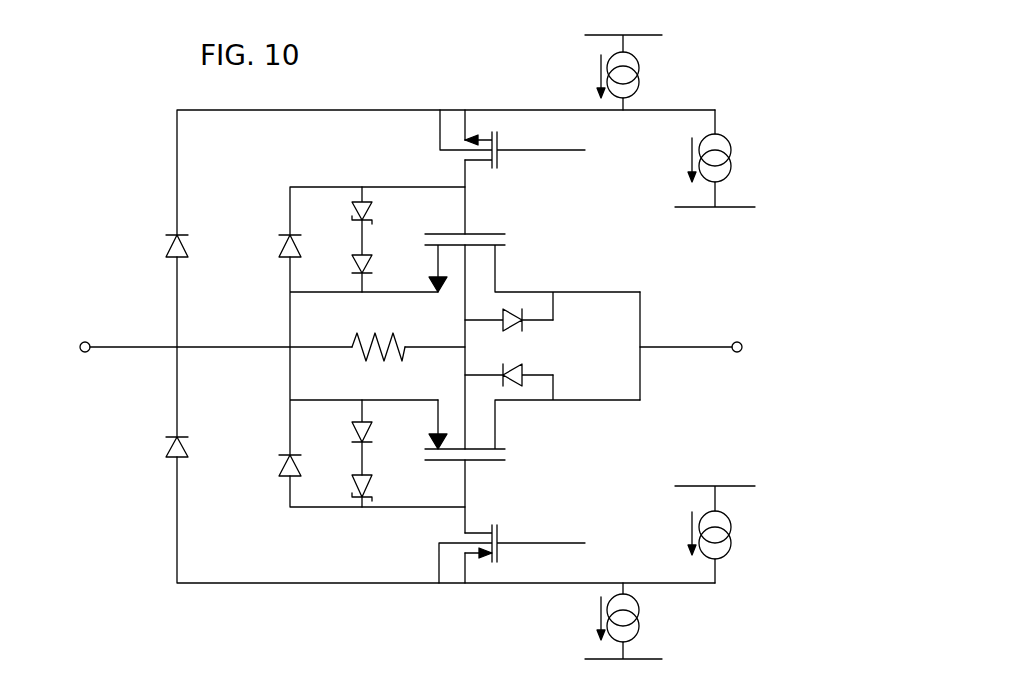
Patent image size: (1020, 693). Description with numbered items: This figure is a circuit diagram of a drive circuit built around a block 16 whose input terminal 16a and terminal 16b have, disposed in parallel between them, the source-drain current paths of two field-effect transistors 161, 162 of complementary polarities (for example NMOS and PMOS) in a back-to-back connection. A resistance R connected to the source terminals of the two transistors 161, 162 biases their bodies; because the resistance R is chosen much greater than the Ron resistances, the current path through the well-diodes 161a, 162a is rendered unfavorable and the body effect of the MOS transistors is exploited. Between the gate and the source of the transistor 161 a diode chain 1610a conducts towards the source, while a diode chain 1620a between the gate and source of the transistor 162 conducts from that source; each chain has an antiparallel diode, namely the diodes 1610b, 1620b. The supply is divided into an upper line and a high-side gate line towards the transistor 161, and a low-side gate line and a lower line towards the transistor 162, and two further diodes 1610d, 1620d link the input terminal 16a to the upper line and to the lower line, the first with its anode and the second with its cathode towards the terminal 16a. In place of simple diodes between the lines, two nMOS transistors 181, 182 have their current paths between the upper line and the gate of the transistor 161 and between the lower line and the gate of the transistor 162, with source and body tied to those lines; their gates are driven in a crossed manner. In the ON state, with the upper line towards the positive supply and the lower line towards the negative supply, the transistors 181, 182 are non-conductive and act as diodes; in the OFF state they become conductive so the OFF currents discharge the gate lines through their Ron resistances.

The block 16 is at (97, 160).
The input terminal 16a is at (93, 335).
The terminal 16b is at (746, 342).
The transistor 161 is at (504, 228).
The transistor 162 is at (497, 468).
The well-diode 161a is at (523, 328).
The well-diode 162a is at (523, 367).
The diode chain 1610a is at (352, 232).
The diode 1610b is at (281, 250).
The diode 1610d is at (166, 250).
The diode chain 1620a is at (352, 460).
The diode 1620b is at (281, 475).
The diode 1620d is at (167, 458).
The resistance R is at (380, 336).
The MOS transistor 181 is at (496, 145).
The MOS transistor 182 is at (500, 556).